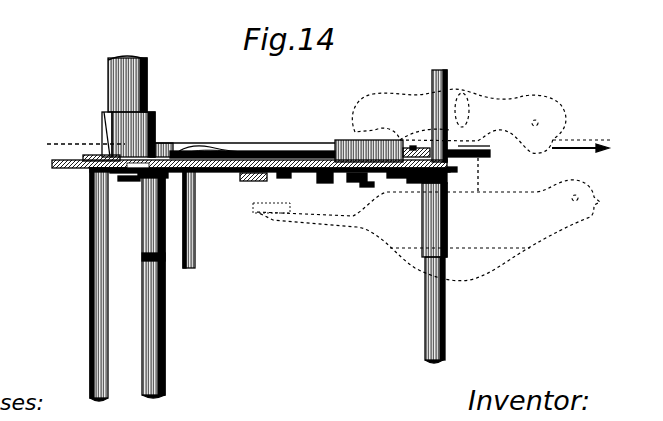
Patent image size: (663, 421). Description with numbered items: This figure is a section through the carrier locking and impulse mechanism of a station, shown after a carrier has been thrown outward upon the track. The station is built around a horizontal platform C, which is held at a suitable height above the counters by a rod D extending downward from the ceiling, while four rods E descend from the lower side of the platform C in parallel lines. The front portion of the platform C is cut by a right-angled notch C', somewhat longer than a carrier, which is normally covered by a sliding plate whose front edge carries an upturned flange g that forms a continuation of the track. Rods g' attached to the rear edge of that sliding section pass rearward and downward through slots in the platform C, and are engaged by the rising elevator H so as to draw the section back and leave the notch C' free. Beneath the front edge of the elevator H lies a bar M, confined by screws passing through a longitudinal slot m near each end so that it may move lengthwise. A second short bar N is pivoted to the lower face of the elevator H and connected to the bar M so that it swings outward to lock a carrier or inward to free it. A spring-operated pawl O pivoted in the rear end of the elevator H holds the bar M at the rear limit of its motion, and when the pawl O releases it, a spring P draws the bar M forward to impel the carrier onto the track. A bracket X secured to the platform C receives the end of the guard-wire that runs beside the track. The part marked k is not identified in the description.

The rod D is at (124, 106).
The platform C is at (86, 140).
The spring-operated pawl O is at (187, 157).
The upturned flange g is at (252, 139).
The elevator H is at (318, 163).
The right-angled notch C' is at (401, 138).
The bracket X is at (461, 115).
The bar M is at (455, 172).
The longitudinal slot m is at (283, 174).
The short bar N is at (316, 174).
The lever k is at (393, 179).
The spring P is at (367, 188).
The rods E is at (108, 323).
The rods g' is at (200, 218).